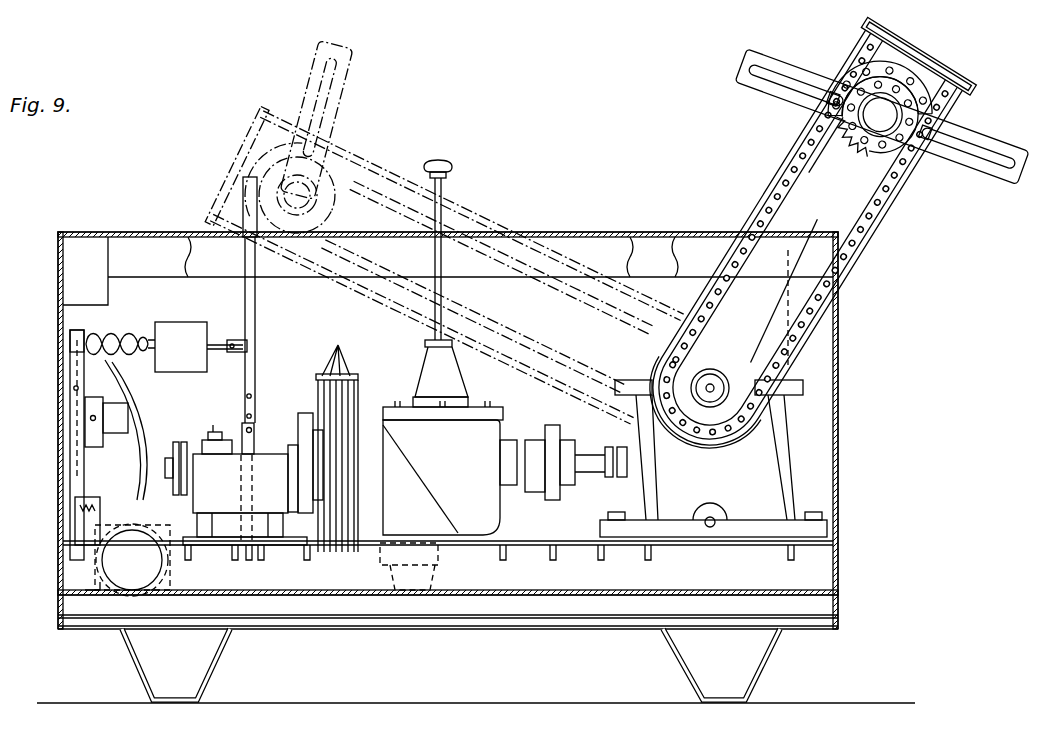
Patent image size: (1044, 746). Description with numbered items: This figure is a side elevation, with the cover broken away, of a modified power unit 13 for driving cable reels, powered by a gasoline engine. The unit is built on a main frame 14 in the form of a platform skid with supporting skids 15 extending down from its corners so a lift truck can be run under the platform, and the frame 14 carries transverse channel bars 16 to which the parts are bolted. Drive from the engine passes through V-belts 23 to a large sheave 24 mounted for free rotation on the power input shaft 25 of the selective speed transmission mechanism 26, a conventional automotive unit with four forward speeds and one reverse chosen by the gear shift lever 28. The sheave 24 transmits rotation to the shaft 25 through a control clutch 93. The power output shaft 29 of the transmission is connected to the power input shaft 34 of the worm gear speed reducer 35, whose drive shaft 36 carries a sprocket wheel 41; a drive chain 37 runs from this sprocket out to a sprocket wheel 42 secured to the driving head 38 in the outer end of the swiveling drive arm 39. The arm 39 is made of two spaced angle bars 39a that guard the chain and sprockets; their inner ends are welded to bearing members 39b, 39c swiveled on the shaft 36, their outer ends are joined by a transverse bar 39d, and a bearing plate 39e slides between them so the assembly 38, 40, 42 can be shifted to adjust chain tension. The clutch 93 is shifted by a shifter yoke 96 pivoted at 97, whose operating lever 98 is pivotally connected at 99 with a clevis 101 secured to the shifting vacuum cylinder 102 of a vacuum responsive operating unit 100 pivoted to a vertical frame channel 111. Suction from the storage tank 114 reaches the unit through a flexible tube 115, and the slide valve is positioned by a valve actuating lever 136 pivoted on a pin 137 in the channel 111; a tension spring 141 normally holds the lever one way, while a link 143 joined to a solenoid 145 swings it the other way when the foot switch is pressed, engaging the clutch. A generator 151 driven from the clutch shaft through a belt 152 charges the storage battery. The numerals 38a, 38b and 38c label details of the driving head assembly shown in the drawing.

The power unit 13 is at (80, 219).
The main frame 14 is at (92, 618).
The supporting skids 15 is at (219, 656).
The transverse channel bars 16 is at (191, 562).
The V-belts 23 is at (337, 347).
The large sheave 24 is at (360, 380).
The power input shaft 25 is at (386, 487).
The selective speed transmission mechanism 26 is at (460, 446).
The gear shift lever 28 is at (452, 166).
The power output shaft 29 is at (520, 445).
The power input shaft 34 is at (592, 458).
The worm gear speed reducer 35 is at (721, 502).
The drive shaft 36 is at (760, 402).
The drive chain 37 is at (472, 214).
The driving head 38 is at (278, 172).
The arm 38a is at (348, 78).
The slot 38b is at (775, 82).
The hub body 38c is at (862, 118).
The drive arm 39 is at (400, 161).
The angle bars 39a is at (780, 182).
The bearing member 39b is at (762, 330).
The bearing member 39c is at (697, 432).
The transverse bar 39d is at (907, 46).
The bearing plate 39e is at (830, 147).
The assembly element 40 is at (905, 118).
The sprocket wheel 41 is at (720, 396).
The sprocket wheel 42 is at (848, 160).
The control clutch 93 is at (303, 428).
The shifter yoke 96 is at (246, 430).
The pivot 97 is at (251, 562).
The operating lever 98 is at (243, 290).
The pivotal connection 99 is at (250, 347).
The vacuum responsive operating unit 100 is at (141, 320).
The clevis 101 is at (236, 352).
The shifting vacuum cylinder 102 is at (181, 322).
The frame channel 111 is at (72, 460).
The suction storage tank 114 is at (102, 570).
The flexible tube 115 is at (122, 402).
The valve actuating lever 136 is at (72, 362).
The pin 137 is at (73, 388).
The tension spring 141 is at (68, 520).
The link 143 is at (86, 418).
The solenoid 145 is at (128, 418).
The generator 151 is at (256, 489).
The belt 152 is at (192, 530).